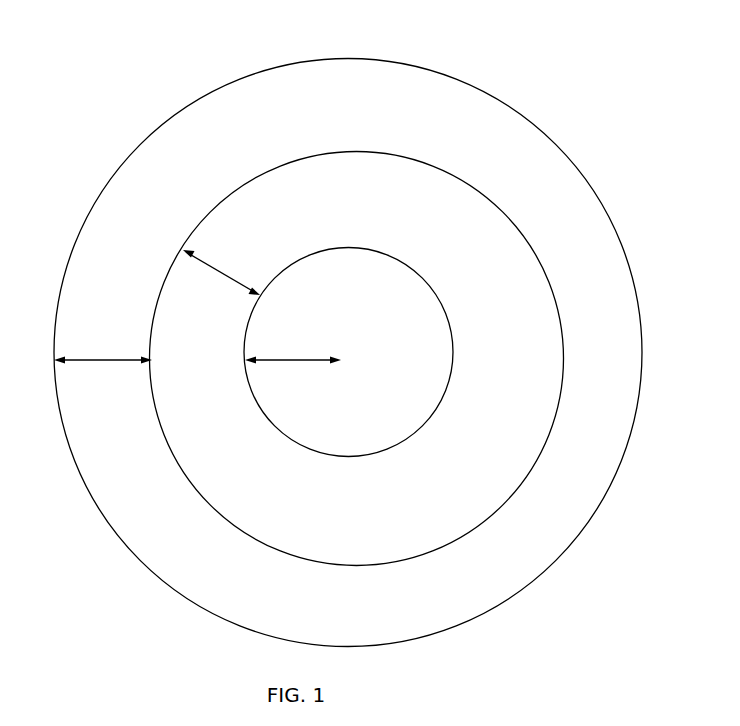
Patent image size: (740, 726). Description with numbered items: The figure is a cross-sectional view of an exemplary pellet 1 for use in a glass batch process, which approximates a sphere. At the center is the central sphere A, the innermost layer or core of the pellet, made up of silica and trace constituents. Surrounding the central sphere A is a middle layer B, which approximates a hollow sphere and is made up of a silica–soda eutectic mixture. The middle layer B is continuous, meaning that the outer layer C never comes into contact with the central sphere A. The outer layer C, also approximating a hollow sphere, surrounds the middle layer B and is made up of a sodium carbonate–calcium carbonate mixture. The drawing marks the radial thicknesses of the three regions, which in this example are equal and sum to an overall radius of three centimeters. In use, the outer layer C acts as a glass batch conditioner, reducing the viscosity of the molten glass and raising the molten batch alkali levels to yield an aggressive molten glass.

The pellet 1 is at (333, 353).
The central sphere A is at (348, 352).
The middle layer B is at (357, 359).
The outer layer C is at (348, 353).